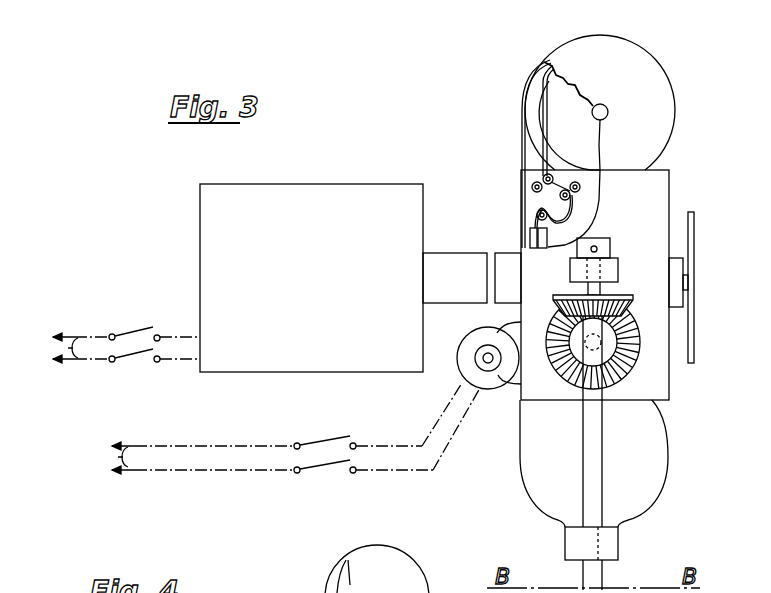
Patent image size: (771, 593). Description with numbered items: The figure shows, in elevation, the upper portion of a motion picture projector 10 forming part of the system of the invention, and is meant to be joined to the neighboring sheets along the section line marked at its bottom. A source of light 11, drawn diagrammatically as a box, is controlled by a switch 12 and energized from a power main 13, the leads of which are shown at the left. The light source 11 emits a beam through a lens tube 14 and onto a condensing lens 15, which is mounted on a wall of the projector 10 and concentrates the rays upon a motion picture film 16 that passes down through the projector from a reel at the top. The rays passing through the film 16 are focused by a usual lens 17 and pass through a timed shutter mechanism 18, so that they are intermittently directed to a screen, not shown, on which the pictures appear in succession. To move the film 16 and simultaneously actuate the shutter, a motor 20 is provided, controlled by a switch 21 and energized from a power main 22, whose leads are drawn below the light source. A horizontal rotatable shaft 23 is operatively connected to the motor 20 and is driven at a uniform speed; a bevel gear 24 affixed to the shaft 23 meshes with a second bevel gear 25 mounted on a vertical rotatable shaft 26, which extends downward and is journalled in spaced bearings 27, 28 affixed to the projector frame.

The motion picture projector 10 is at (613, 141).
The source of light 11 is at (311, 278).
The switch 12 is at (137, 355).
The power main 13 is at (57, 348).
The lens tube 14 is at (455, 278).
The condensing lens 15 is at (508, 278).
The motion picture film 16 is at (541, 153).
The lens 17 is at (676, 268).
The timed shutter mechanism 18 is at (694, 335).
The motor 20 is at (471, 345).
The switch 21 is at (363, 465).
The power main 22 is at (187, 458).
The horizontal rotatable shaft 23 is at (578, 352).
The bevel gear 24 is at (621, 364).
The second bevel gear 25 is at (620, 300).
The vertical rotatable shaft 26 is at (587, 467).
The bearing 27 is at (613, 265).
The bearing 28 is at (617, 540).